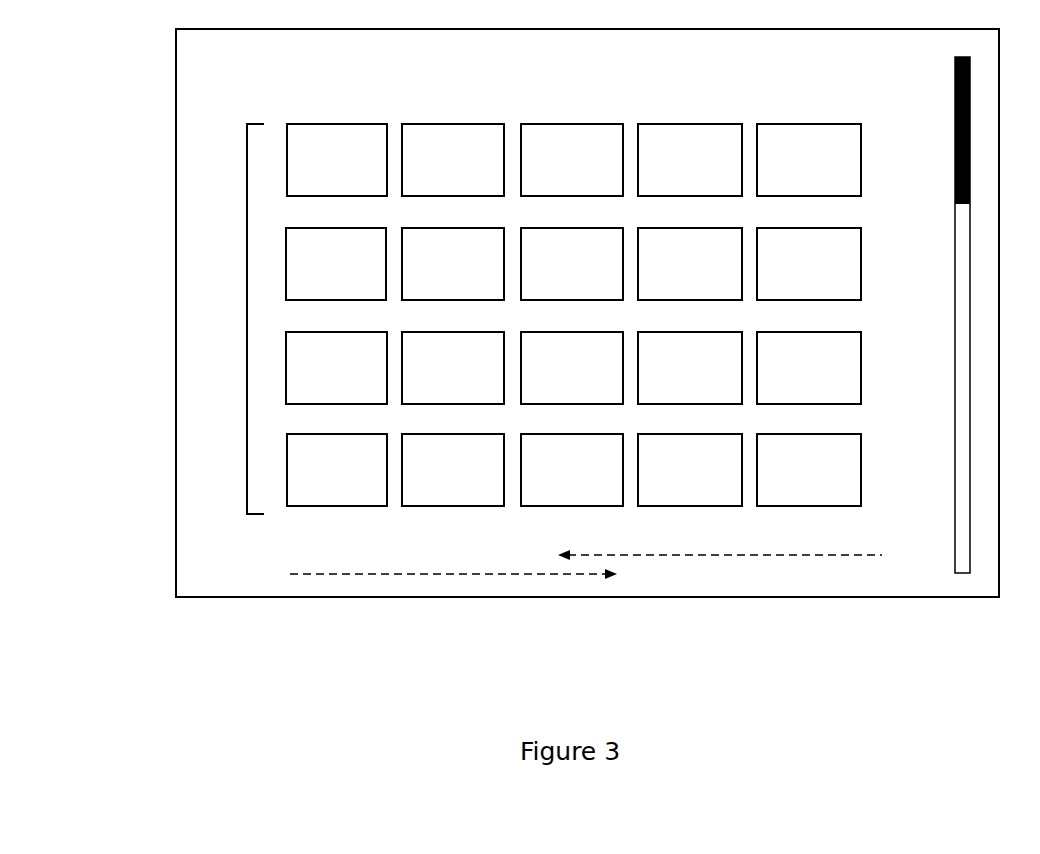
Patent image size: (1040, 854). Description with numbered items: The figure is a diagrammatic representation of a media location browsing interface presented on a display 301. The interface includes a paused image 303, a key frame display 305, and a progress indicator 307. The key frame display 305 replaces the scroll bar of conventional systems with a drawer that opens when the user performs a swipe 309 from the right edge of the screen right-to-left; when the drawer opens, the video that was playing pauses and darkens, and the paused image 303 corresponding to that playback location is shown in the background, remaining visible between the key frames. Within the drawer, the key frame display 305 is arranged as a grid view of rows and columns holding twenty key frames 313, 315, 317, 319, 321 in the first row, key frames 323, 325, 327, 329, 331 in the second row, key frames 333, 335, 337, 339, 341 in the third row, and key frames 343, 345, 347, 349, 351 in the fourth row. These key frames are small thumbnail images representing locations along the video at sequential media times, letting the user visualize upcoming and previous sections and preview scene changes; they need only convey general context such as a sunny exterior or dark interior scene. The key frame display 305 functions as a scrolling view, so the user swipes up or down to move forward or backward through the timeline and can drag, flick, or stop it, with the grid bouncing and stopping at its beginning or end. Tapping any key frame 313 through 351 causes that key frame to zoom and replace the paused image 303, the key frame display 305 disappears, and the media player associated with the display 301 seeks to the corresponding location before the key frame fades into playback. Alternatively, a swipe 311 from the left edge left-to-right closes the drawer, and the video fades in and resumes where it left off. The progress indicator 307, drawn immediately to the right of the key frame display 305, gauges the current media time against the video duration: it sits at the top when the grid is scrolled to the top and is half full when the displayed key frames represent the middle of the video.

The display 301 is at (176, 88).
The paused image 303 is at (193, 147).
The key frame display 305 is at (247, 280).
The progress indicator 307 is at (955, 537).
The swiping (right-to-left) 309 is at (720, 546).
The swiping (left-to-right) 311 is at (453, 564).
The key frame 313 is at (322, 169).
The key frame 315 is at (438, 169).
The key frame 317 is at (557, 169).
The key frame 319 is at (675, 169).
The key frame 321 is at (794, 169).
The key frame 323 is at (321, 273).
The key frame 325 is at (438, 273).
The key frame 327 is at (557, 273).
The key frame 329 is at (675, 273).
The key frame 331 is at (794, 273).
The key frame 333 is at (321, 377).
The key frame 335 is at (438, 377).
The key frame 337 is at (557, 377).
The key frame 339 is at (675, 377).
The key frame 341 is at (794, 377).
The key frame 343 is at (322, 479).
The key frame 345 is at (438, 479).
The key frame 347 is at (557, 479).
The key frame 349 is at (675, 479).
The key frame 351 is at (794, 479).